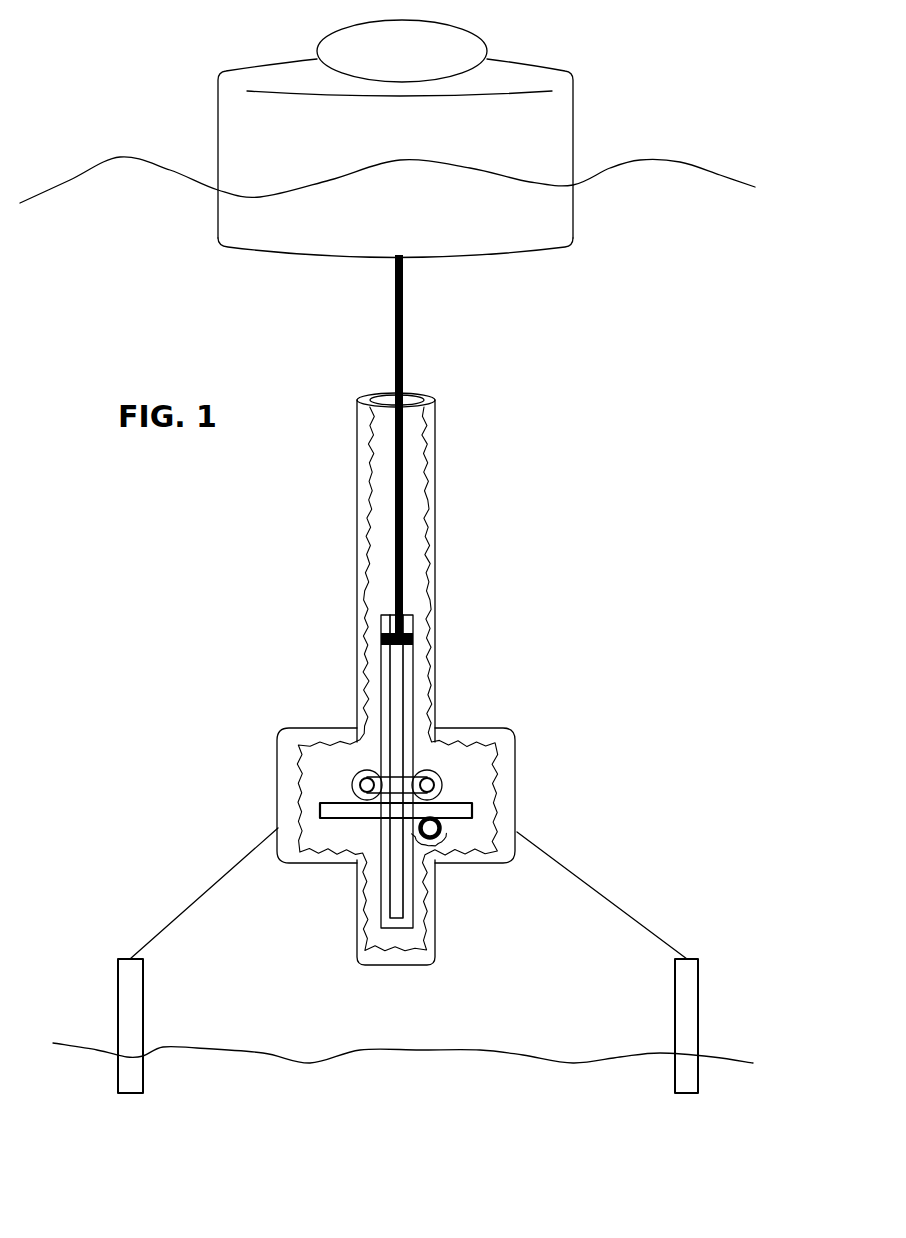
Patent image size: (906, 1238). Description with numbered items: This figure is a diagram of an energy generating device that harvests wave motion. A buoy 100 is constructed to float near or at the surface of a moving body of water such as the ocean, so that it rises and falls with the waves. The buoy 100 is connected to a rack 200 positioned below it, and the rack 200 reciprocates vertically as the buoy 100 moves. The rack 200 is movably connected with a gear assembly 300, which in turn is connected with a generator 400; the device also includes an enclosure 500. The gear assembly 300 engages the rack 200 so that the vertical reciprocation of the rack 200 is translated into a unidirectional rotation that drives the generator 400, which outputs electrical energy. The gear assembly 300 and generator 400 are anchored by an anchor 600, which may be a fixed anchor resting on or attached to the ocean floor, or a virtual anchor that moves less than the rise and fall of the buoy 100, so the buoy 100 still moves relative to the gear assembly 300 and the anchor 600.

The buoy 100 is at (430, 139).
The rack 200 is at (406, 679).
The gear assembly 300 is at (458, 724).
The generator 400 is at (477, 876).
The enclosure 500 is at (366, 795).
The anchor 600 is at (456, 960).